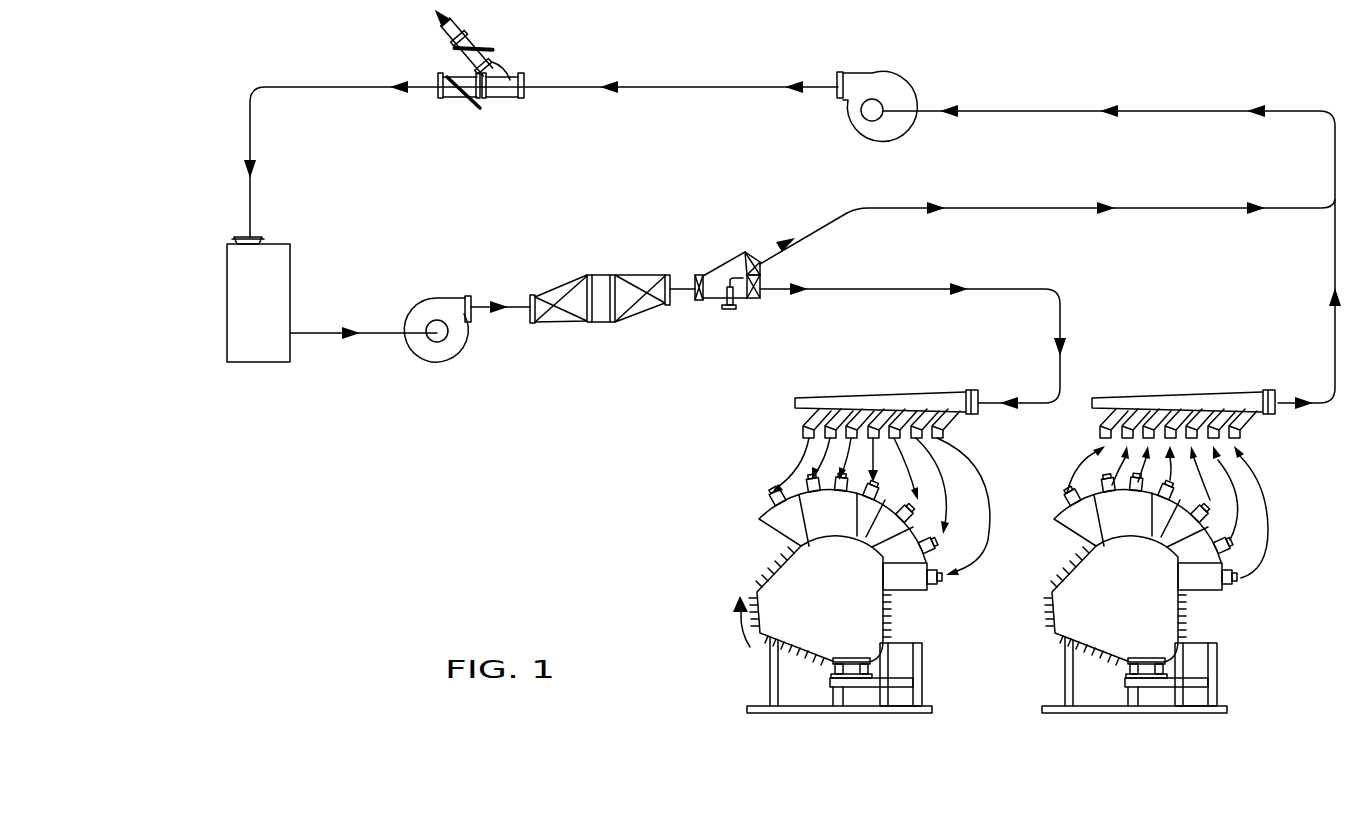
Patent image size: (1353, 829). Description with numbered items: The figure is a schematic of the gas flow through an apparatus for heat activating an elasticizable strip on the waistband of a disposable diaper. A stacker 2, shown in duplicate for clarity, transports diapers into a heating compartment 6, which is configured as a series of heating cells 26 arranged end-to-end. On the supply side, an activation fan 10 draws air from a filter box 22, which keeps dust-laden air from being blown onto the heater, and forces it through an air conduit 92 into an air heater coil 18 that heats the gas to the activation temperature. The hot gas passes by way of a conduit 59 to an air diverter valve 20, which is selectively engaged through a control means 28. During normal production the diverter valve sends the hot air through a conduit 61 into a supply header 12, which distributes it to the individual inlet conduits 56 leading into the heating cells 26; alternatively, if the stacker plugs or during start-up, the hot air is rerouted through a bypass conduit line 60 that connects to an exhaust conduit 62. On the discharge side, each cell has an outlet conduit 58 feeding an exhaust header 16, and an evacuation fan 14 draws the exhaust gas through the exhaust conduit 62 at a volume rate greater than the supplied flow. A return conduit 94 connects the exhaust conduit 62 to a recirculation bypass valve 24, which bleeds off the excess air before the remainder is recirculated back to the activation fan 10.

The stacker 2 is at (1027, 660).
The heating compartment 6 is at (762, 530).
The activation fan 10 is at (432, 362).
The supply header 12 is at (952, 392).
The evacuation fan 14 is at (890, 75).
The exhaust header 16 is at (1112, 392).
The air heater coil 18 is at (590, 278).
The air diverter valve 20 is at (742, 298).
The filter box 22 is at (277, 243).
The recirculation bypass valve 24 is at (478, 34).
The heating cells 26 is at (812, 532).
The control means 28 is at (722, 312).
The inlet conduit 56 is at (770, 498).
The outlet conduit 58 is at (1065, 497).
The conduit 59 is at (684, 288).
The bypass conduit line 60 is at (1018, 206).
The conduit 61 is at (1052, 300).
The exhaust conduit 62 is at (1187, 106).
The air conduit 92 is at (503, 312).
The return conduit 94 is at (664, 82).